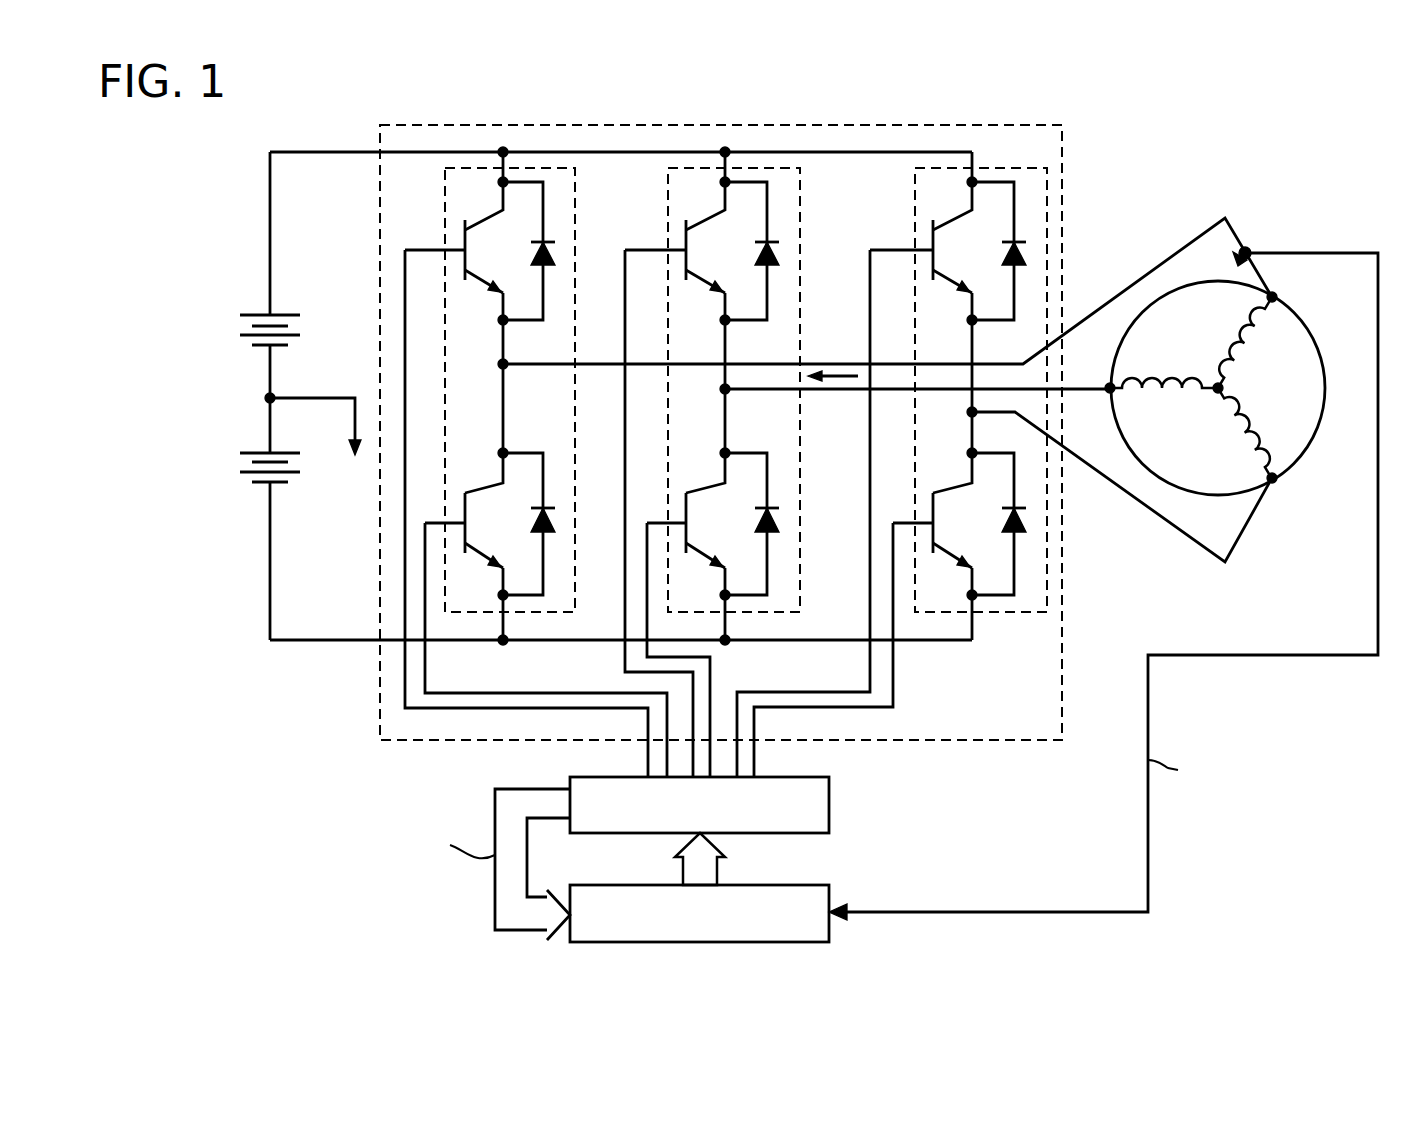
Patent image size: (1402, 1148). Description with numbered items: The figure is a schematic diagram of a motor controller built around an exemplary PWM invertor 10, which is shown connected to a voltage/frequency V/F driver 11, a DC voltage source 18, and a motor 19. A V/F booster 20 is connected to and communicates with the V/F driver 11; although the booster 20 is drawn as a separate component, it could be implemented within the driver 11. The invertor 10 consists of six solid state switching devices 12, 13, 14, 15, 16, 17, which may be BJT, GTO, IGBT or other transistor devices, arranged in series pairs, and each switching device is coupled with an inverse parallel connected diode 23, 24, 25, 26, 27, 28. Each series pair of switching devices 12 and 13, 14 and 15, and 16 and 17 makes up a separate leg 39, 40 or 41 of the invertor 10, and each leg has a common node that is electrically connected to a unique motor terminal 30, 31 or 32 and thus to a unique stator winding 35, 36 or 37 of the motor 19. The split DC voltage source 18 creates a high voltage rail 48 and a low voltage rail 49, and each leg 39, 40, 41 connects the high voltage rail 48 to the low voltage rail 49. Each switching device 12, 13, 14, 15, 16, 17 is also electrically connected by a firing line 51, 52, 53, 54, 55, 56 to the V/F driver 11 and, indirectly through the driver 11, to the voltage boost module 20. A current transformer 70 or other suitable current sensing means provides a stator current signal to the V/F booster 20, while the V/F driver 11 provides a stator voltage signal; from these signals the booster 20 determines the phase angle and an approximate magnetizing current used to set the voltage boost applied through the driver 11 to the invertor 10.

The PWM invertor 10 is at (470, 125).
The V/F driver 11 is at (829, 790).
The switching device 12 is at (532, 212).
The switching device 13 is at (523, 464).
The switching device 14 is at (754, 212).
The switching device 15 is at (743, 464).
The switching device 16 is at (1008, 207).
The switching device 17 is at (970, 476).
The DC voltage source 18 is at (252, 222).
The motor 19 is at (1312, 313).
The V/F booster 20 is at (815, 885).
The diode 23 is at (530, 256).
The diode 24 is at (531, 526).
The diode 25 is at (753, 256).
The diode 26 is at (754, 526).
The diode 27 is at (1001, 256).
The diode 28 is at (999, 526).
The motor terminal 30 is at (1115, 386).
The motor terminal 31 is at (1272, 297).
The motor terminal 32 is at (1275, 478).
The stator winding 35 is at (1175, 391).
The stator winding 36 is at (1247, 338).
The stator winding 37 is at (1240, 412).
The leg 39 is at (464, 202).
The leg 40 is at (686, 202).
The leg 41 is at (934, 202).
The high voltage rail 48 is at (331, 152).
The low voltage rail 49 is at (292, 640).
The firing line 51 is at (440, 705).
The firing line 52 is at (515, 693).
The firing line 53 is at (622, 620).
The firing line 54 is at (712, 682).
The firing line 55 is at (868, 663).
The firing line 56 is at (897, 677).
The current transformer 70 is at (1247, 250).